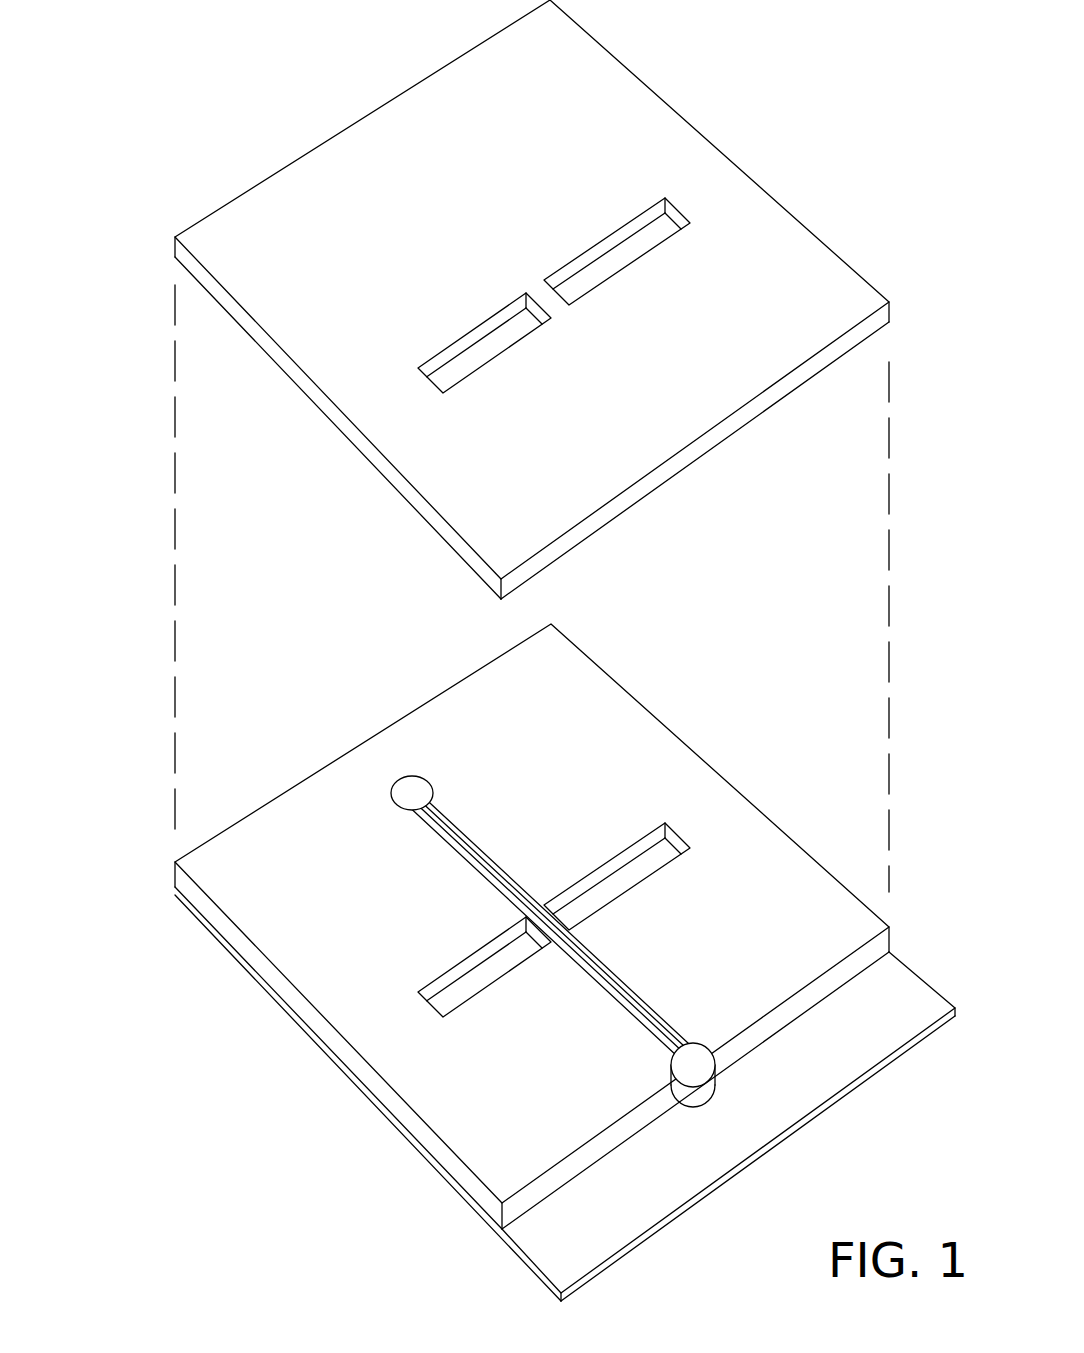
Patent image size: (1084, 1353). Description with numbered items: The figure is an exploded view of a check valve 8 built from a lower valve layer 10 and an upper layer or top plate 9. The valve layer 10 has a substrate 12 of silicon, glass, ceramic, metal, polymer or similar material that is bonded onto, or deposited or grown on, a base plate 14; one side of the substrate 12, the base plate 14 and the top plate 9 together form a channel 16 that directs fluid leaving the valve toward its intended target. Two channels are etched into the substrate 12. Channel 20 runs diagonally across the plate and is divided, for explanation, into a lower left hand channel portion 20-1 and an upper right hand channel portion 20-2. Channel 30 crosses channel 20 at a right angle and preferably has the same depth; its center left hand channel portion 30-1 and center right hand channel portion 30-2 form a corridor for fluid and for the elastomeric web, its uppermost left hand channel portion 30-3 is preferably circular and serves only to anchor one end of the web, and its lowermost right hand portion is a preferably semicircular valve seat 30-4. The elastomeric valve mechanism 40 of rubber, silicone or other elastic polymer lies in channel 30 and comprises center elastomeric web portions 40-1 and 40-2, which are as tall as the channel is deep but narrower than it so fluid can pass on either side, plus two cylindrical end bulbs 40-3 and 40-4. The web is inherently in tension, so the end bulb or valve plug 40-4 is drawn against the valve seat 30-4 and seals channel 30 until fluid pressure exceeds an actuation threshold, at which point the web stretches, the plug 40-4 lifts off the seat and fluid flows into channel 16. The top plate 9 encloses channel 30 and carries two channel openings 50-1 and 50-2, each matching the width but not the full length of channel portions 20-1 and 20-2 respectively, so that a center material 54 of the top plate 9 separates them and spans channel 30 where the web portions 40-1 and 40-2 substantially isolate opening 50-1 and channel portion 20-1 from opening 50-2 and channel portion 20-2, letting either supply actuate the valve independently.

The check valve 8 is at (148, 600).
The top plate 9 is at (532, 299).
The valve layer 10 is at (560, 962).
The substrate 12 is at (540, 1116).
The base plate 14 is at (663, 1188).
The channel 16 is at (552, 1240).
The channel 20 is at (539, 918).
The channel portion 20-1 is at (462, 962).
The channel portion 20-2 is at (627, 848).
The channel 30 is at (527, 946).
The channel portion 30-1 is at (468, 830).
The channel portion 30-2 is at (660, 1020).
The channel portion 30-3 is at (417, 798).
The valve seat 30-4 is at (659, 1095).
The elastomeric valve mechanism 40 is at (552, 927).
The elastomeric web portion 40-1 is at (503, 875).
The elastomeric web portion 40-2 is at (623, 996).
The end bulb 40-3 is at (405, 803).
The valve plug 40-4 is at (712, 1090).
The channel opening 50-1 is at (472, 328).
The channel opening 50-2 is at (607, 240).
The center material 54 is at (562, 310).